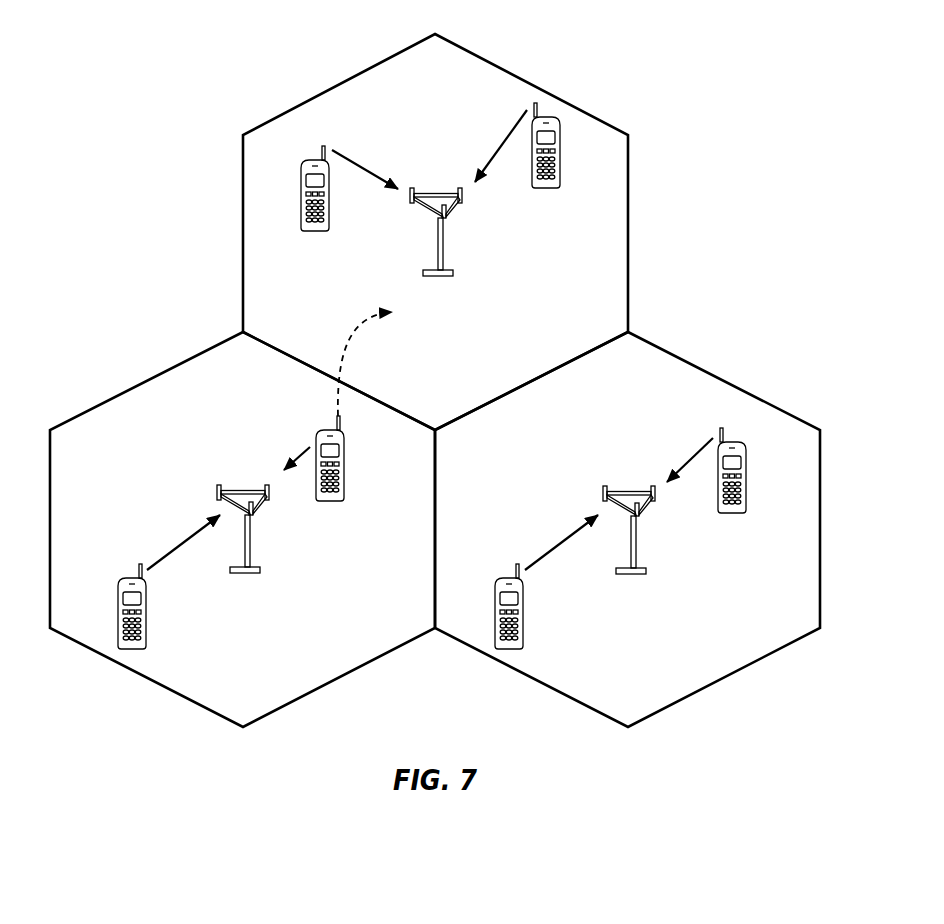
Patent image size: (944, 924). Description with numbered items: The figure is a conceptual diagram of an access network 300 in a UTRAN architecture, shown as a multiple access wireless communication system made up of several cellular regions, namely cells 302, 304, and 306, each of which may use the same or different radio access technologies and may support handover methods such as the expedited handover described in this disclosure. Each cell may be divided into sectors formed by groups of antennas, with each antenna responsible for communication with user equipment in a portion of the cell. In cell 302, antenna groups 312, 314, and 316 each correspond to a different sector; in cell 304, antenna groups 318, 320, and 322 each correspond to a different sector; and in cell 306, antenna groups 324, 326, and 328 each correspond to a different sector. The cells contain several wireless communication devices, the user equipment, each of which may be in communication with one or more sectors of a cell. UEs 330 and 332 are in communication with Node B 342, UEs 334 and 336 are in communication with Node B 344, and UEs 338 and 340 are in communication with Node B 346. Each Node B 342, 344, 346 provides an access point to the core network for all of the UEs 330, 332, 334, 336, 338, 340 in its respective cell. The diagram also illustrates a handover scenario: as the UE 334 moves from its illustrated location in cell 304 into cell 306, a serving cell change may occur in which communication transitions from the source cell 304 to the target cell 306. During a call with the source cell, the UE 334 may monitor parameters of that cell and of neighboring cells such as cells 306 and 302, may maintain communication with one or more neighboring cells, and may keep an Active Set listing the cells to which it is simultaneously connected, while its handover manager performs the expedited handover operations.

The access network 300 is at (738, 61).
The cell 302 is at (720, 378).
The cell 304 is at (130, 389).
The cell 306 is at (512, 72).
The antenna group 312 is at (604, 494).
The antenna group 314 is at (639, 518).
The antenna group 316 is at (657, 500).
The antenna group 318 is at (253, 517).
The antenna group 320 is at (270, 500).
The antenna group 322 is at (218, 493).
The antenna group 324 is at (412, 205).
The antenna group 326 is at (446, 220).
The antenna group 328 is at (465, 200).
The UE 330 is at (746, 461).
The UE 332 is at (495, 598).
The UE 334 is at (343, 448).
The UE 336 is at (118, 598).
The UE 338 is at (312, 231).
The UE 340 is at (550, 188).
The Node B 342 is at (627, 510).
The Node B 344 is at (242, 508).
The Node B 346 is at (435, 212).